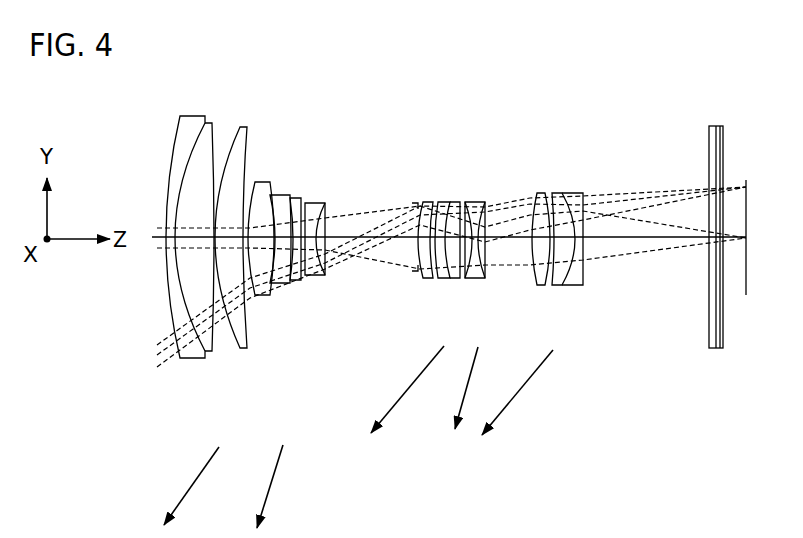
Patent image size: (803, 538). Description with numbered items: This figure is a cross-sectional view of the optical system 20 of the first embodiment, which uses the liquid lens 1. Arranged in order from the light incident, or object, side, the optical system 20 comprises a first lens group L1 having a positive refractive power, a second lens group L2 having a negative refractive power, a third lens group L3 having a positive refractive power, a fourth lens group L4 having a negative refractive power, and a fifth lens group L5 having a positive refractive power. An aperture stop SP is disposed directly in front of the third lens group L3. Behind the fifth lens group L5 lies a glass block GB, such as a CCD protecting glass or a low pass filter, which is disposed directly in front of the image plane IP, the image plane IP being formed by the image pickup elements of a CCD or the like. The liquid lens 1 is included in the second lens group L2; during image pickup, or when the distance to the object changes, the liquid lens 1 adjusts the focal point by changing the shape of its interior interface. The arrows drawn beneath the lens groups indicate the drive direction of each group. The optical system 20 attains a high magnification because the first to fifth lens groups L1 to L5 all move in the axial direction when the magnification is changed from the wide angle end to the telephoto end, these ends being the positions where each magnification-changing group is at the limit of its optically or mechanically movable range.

The optical system 20 is at (612, 110).
The first lens group L1 is at (248, 368).
The second lens group L2 is at (286, 273).
The liquid lens 1 is at (312, 264).
The aperture stop SP is at (418, 203).
The third lens group L3 is at (460, 285).
The fourth lens group L4 is at (487, 285).
The fifth lens group L5 is at (585, 295).
The glass block GB is at (722, 340).
The image plane IP is at (746, 284).